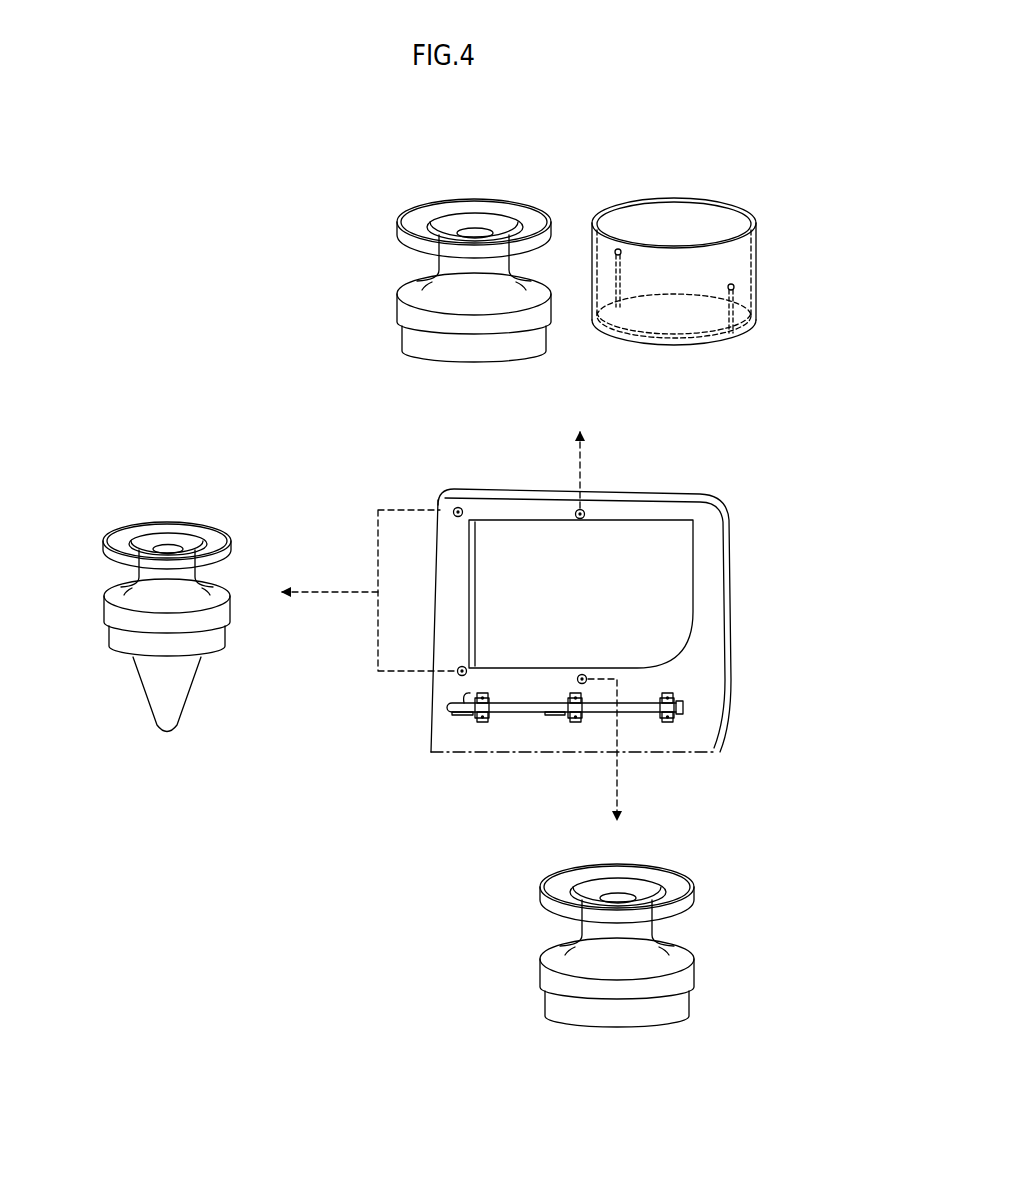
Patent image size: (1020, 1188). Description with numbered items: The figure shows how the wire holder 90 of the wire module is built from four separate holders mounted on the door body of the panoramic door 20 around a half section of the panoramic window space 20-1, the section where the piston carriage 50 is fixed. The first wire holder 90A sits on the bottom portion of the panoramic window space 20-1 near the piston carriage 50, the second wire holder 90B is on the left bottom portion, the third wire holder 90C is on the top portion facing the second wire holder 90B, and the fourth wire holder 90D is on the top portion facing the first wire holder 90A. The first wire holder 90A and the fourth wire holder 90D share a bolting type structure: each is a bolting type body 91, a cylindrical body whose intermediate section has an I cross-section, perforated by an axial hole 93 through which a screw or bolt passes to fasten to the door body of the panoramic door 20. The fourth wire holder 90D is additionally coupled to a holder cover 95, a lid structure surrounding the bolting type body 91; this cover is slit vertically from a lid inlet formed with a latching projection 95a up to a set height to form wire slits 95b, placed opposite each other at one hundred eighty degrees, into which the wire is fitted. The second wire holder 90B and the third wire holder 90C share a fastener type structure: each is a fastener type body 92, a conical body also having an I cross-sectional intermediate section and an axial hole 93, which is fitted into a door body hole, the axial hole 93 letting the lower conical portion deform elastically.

The panoramic door 20 is at (716, 618).
The panoramic window space 20-1 is at (672, 568).
The piston carriage 50 is at (687, 709).
The wire holder 90 is at (608, 600).
The first wire holder 90A is at (582, 675).
The second wire holder 90B is at (467, 671).
The third wire holder 90C is at (463, 513).
The fourth wire holder 90D is at (297, 221).
The bolting type body 91 is at (430, 300).
The fastener type body 92 is at (112, 613).
The axial hole 93 is at (476, 233).
The holder cover 95 is at (710, 273).
The latching projection 95a is at (688, 345).
The wire slits 95b is at (737, 292).